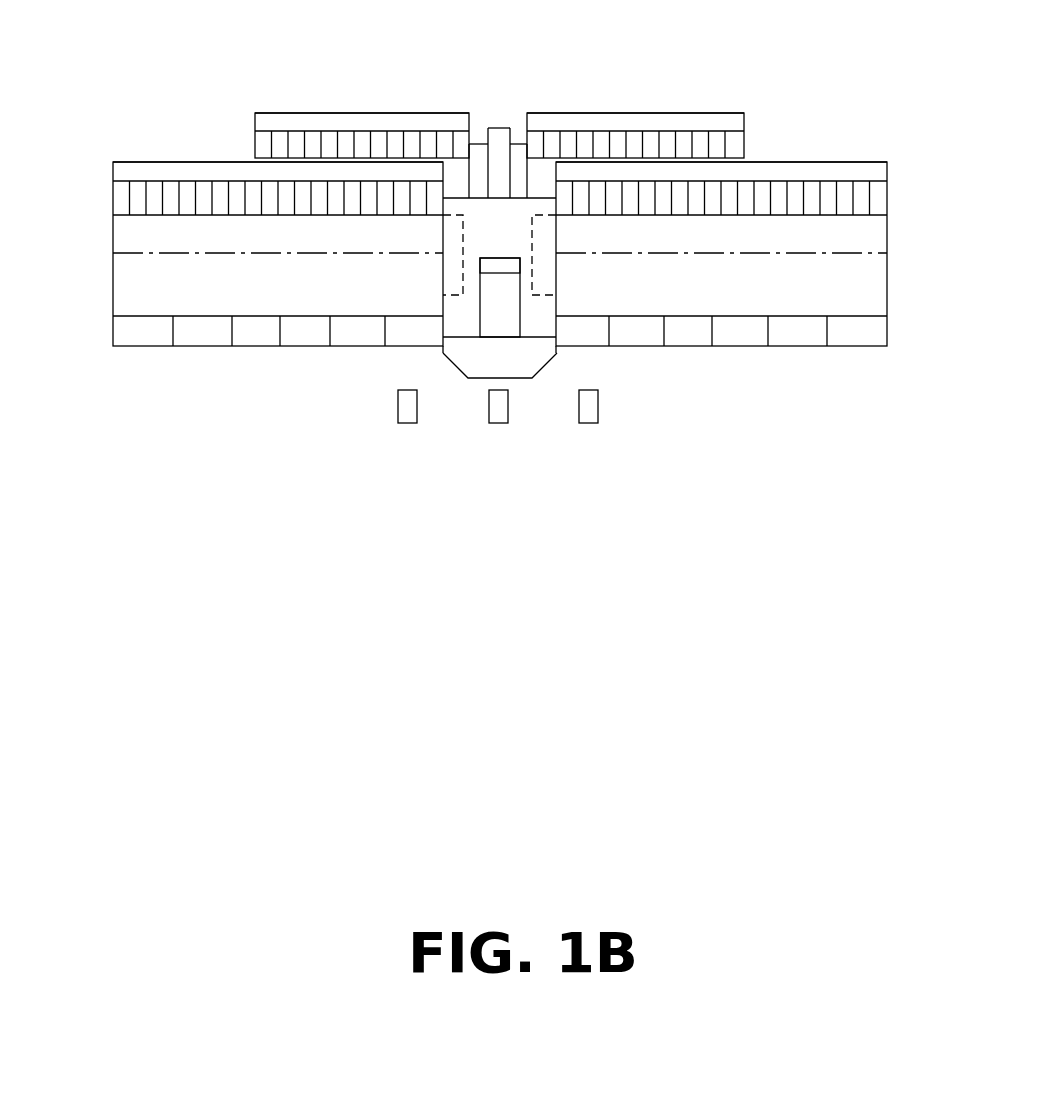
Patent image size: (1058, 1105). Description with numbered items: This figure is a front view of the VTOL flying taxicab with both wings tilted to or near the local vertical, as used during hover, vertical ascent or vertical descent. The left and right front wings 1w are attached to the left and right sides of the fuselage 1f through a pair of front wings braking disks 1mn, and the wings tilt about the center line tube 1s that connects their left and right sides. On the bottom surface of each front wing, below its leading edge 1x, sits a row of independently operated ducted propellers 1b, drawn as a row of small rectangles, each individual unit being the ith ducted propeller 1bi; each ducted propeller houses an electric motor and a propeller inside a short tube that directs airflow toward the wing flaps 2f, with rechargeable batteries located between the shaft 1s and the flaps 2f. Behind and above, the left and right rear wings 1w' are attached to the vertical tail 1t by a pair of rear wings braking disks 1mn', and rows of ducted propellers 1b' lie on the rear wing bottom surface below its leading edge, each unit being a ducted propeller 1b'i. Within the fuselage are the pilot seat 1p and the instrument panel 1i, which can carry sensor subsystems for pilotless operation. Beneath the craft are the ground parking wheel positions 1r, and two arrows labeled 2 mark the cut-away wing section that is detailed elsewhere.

The front-wings left and right 1w is at (501, 270).
The front wing-bottom surface ducted propellers 1b is at (505, 195).
The ith ducted propeller of row 1b 1bi is at (253, 192).
The leading edge of front wing 1x is at (137, 162).
The wing flaps 2f is at (113, 330).
The center line tube of front wing 1s is at (165, 255).
The rear-wing bottom ducted propellers 1b' is at (494, 113).
The ducted propeller of rear-wing row 1b' 1b'i is at (499, 95).
The rear-wing left and right 1w' is at (486, 135).
The vertical tail 1t is at (503, 123).
The rear wings braking disks 1mn' is at (481, 85).
The front wings braking disks 1mn is at (498, 235).
The fuselage 1f is at (443, 285).
The pilot seat 1p is at (502, 270).
The instrument panel 1i is at (514, 313).
The ground parking wheel positions 1r is at (417, 407).
The cut-away section arrows 2 is at (811, 319).